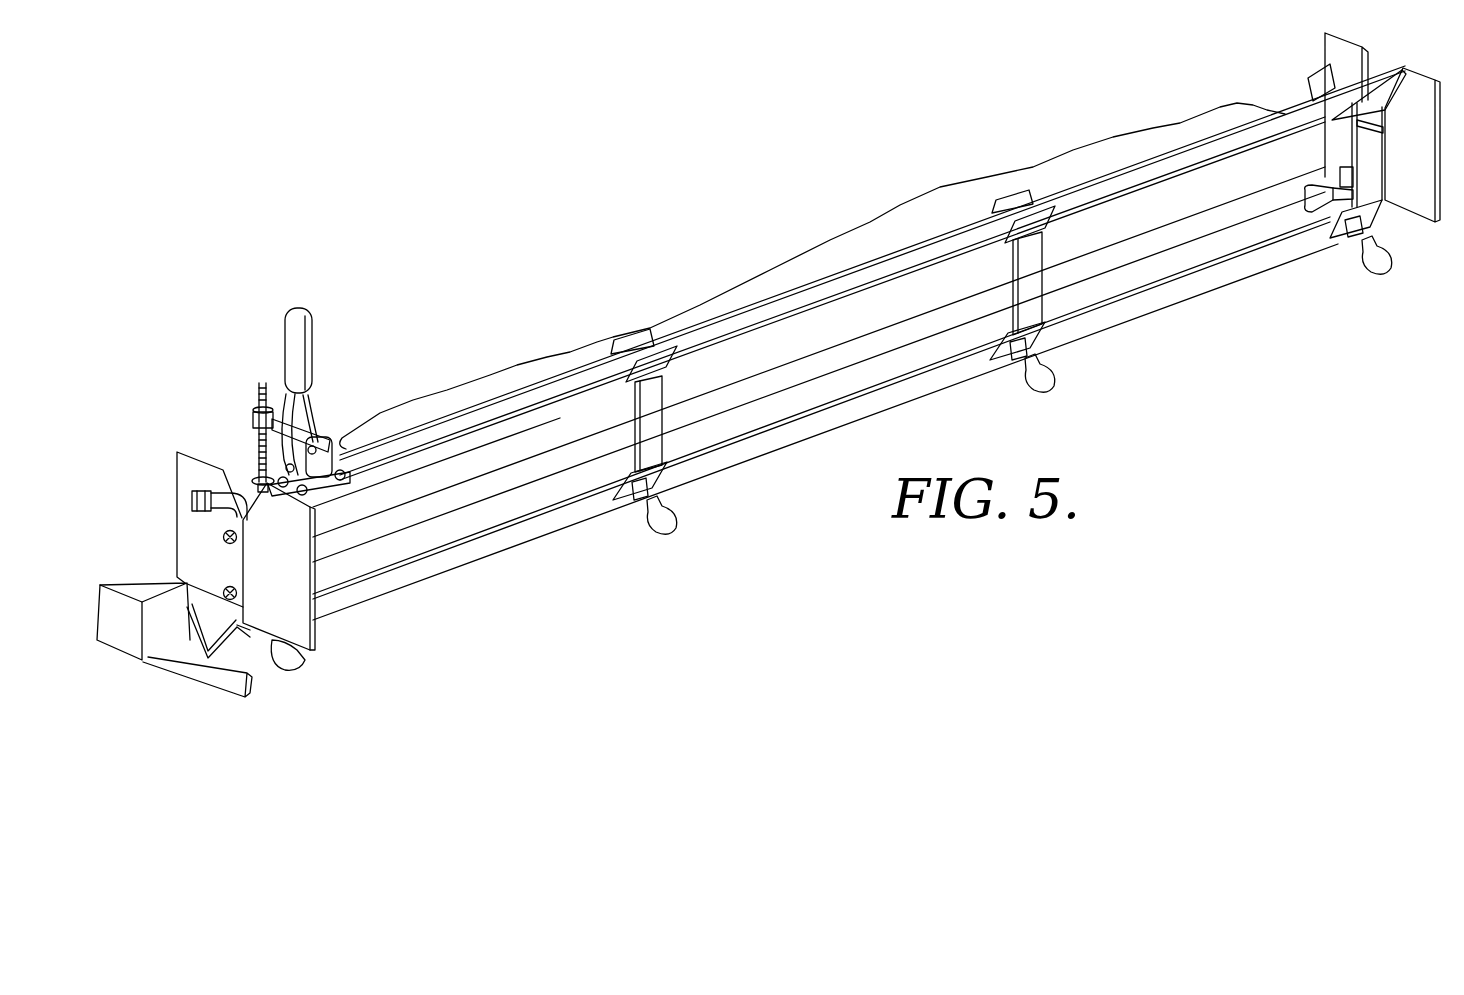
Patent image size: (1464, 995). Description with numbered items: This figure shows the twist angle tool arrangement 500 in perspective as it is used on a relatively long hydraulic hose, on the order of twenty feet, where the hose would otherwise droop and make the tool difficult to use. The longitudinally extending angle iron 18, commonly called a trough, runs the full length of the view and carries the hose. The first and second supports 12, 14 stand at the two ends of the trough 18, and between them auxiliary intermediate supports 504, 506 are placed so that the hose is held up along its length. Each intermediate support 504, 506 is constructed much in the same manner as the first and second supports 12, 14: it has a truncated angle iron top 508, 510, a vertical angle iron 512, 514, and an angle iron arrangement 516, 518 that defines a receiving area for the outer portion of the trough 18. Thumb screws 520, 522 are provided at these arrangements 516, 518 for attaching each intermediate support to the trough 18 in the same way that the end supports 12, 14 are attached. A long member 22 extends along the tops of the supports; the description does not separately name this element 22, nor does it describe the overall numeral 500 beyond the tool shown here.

The first support 12 is at (232, 463).
The second support 14 is at (1310, 68).
The angle iron (trough) 18 is at (1275, 262).
The rail 22 is at (697, 323).
The rail assembly 500 is at (812, 157).
The intermediate support 504 is at (660, 447).
The intermediate support 506 is at (1043, 308).
The truncated angle iron top 508 is at (630, 342).
The truncated angle iron top 510 is at (1012, 195).
The vertical angle iron 512 is at (658, 382).
The vertical angle iron 514 is at (1036, 242).
The angle iron arrangement 516 is at (650, 475).
The angle iron arrangement 518 is at (1030, 338).
The thumb screw 520 is at (657, 527).
The thumb screw 522 is at (1037, 393).